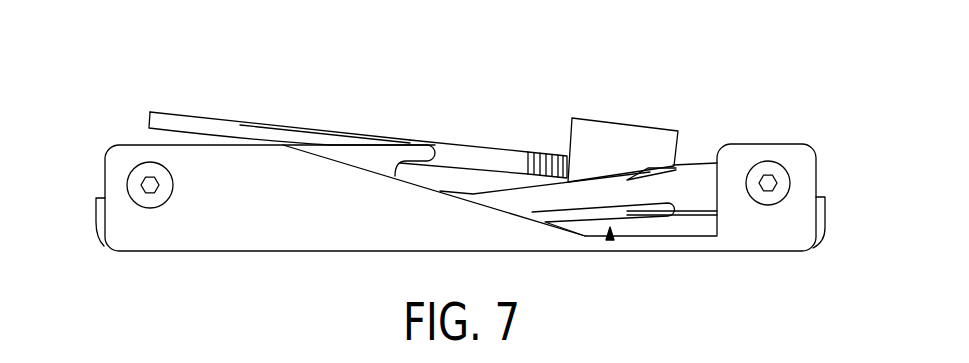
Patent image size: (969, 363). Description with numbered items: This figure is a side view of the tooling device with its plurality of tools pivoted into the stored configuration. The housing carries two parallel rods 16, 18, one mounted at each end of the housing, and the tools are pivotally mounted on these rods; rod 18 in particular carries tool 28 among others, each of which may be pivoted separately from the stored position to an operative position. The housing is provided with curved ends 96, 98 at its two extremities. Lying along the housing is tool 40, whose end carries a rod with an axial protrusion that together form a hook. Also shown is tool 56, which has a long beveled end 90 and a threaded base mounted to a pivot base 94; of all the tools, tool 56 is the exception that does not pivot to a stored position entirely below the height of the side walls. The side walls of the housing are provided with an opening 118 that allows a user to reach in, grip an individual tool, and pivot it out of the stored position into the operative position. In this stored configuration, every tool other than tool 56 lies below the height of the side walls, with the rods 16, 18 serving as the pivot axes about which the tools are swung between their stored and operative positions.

The rod 16 is at (782, 168).
The rod 18 is at (167, 192).
The tool 28 is at (375, 158).
The tool 40 is at (690, 197).
The tool 56 is at (480, 153).
The long beveled end 90 is at (181, 125).
The pivot base 94 is at (635, 143).
The curved end 96 is at (93, 207).
The curved end 98 is at (823, 213).
The opening 118 is at (610, 240).